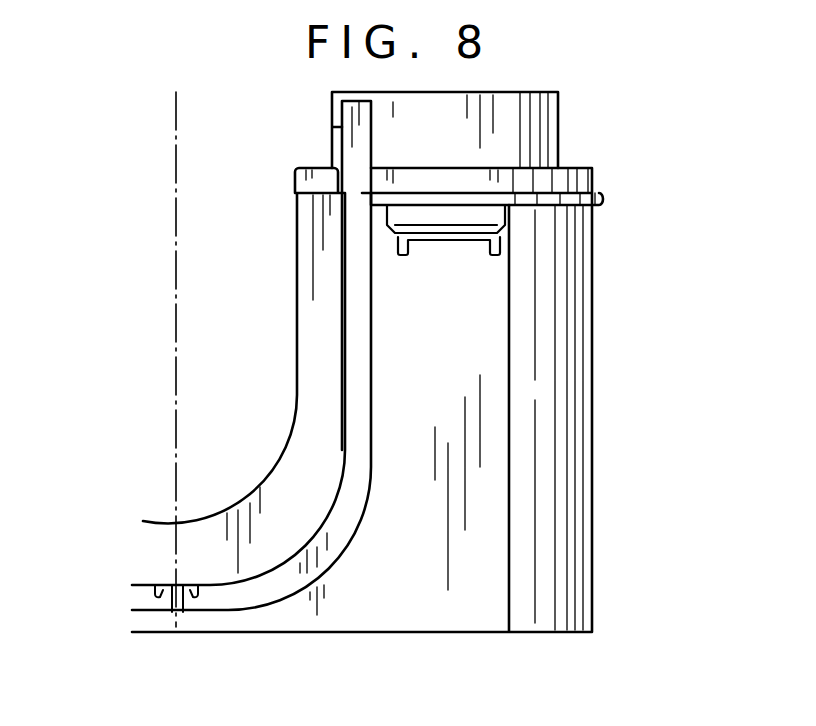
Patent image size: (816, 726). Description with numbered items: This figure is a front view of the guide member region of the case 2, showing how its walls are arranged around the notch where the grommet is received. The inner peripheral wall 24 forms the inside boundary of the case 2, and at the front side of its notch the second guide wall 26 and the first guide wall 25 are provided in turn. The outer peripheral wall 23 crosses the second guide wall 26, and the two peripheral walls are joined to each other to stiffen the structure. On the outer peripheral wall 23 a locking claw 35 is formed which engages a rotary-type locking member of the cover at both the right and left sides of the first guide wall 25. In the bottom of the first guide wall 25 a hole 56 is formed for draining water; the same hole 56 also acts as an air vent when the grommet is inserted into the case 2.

The case 2 is at (617, 185).
The outer peripheral wall 23 is at (592, 367).
The inner peripheral wall 24 is at (558, 122).
The first guide wall 25 is at (307, 265).
The second guide wall 26 is at (357, 313).
The locking claw 35 is at (460, 240).
The hole 56 is at (160, 597).